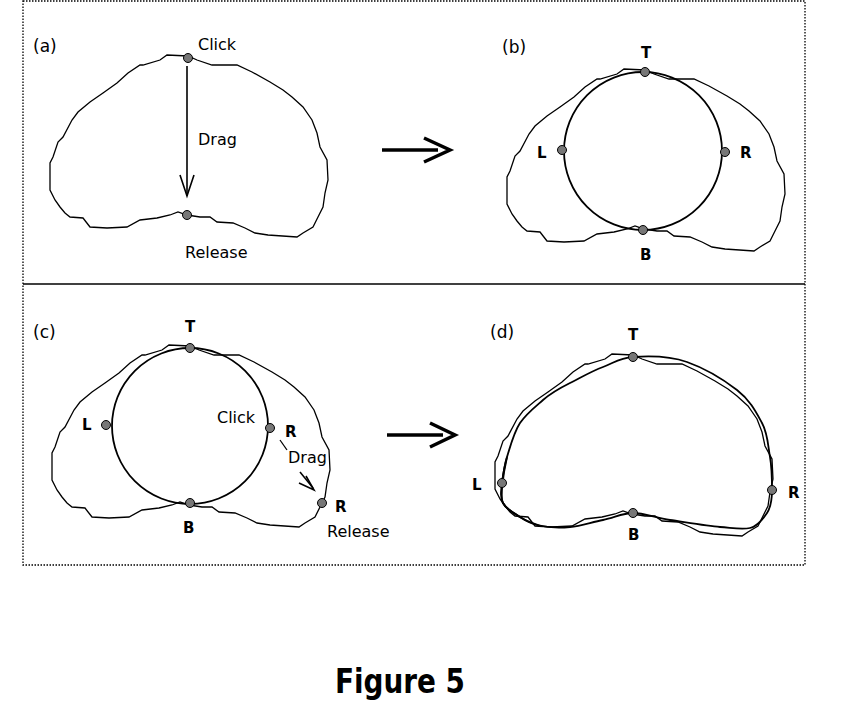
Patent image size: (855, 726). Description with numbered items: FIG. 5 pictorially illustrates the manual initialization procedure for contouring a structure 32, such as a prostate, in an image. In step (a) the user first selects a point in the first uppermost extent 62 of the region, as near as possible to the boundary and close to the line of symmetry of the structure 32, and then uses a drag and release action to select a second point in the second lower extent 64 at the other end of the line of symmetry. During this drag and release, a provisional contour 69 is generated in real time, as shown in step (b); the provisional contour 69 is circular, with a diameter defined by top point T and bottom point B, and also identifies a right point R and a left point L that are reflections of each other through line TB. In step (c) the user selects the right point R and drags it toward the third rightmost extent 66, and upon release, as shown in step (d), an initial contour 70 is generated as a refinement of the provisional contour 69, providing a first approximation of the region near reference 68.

The structure 32 is at (283, 90).
The first uppermost extent 62 is at (181, 51).
The second lower extent 64 is at (168, 229).
The provisional contour 69 is at (710, 200).
The third rightmost extent 66 is at (338, 490).
The initial contour 70 is at (540, 403).
The adjusted contour segment 68 is at (500, 509).